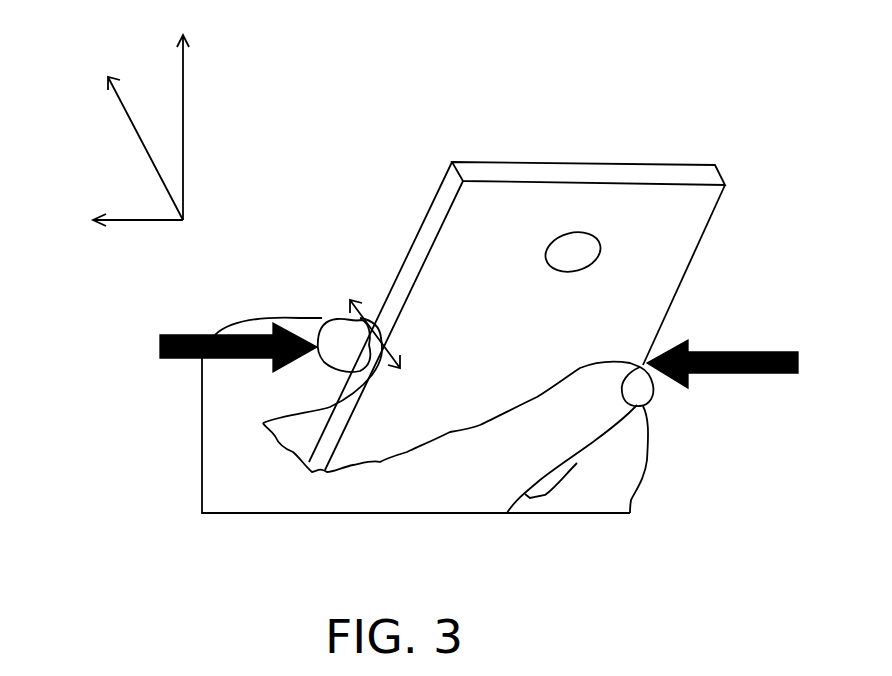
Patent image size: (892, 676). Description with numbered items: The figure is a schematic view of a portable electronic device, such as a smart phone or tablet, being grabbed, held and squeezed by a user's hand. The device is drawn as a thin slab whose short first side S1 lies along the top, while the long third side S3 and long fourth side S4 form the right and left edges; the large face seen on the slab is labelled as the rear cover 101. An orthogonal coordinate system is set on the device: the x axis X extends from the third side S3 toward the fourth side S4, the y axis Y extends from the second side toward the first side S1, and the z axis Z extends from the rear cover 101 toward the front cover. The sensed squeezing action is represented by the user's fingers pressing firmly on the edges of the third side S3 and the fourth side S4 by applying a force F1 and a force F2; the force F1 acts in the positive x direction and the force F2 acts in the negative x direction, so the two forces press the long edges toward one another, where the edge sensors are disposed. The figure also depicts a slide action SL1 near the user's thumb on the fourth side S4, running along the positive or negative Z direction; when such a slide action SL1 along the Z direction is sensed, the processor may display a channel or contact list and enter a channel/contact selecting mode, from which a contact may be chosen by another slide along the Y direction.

The rear cover 101 is at (692, 222).
The first side S1 is at (600, 170).
The third side S3 is at (693, 258).
The fourth side S4 is at (437, 204).
The slide action SL1 is at (396, 334).
The force F1 is at (722, 351).
The force F2 is at (238, 328).
The x axis X is at (120, 222).
The y axis Y is at (182, 110).
The z axis Z is at (136, 136).